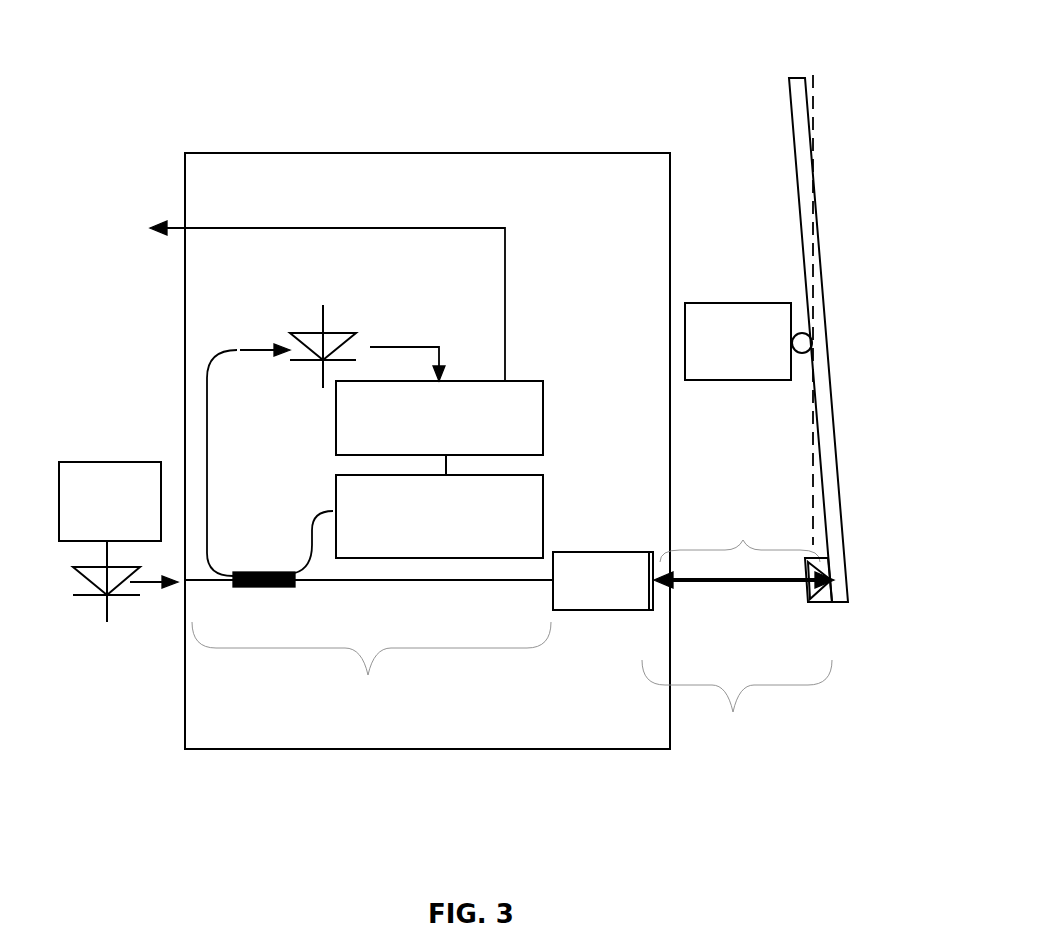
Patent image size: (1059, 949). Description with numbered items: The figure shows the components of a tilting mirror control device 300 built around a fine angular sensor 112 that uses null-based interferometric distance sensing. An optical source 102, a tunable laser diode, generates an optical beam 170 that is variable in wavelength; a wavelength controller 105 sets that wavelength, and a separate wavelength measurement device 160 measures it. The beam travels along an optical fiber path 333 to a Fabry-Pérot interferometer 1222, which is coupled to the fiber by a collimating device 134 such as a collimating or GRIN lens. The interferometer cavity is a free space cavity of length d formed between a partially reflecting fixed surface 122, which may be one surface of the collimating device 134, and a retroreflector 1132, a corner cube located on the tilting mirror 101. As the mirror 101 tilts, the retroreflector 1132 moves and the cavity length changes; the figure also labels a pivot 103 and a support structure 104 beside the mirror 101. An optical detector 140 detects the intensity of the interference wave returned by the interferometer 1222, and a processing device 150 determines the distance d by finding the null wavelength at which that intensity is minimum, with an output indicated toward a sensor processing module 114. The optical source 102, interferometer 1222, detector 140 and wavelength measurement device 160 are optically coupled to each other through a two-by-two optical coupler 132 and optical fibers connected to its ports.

The tilting mirror control device 300 is at (140, 106).
The fine angular sensor 112 is at (500, 181).
The sensor processing module 114 is at (283, 294).
The optical detector 140 is at (342, 323).
The processing device 150 is at (439, 418).
The wavelength measurement device 160 is at (439, 506).
The optical coupler 132 is at (270, 493).
The wavelength controller 105 is at (93, 535).
The optical source 102 is at (95, 603).
The optical beam 170 is at (146, 585).
The optical fiber path 333 is at (369, 657).
The collimating device 134 is at (601, 581).
The partially reflecting fixed surface 122 is at (651, 553).
The Fabry-Pérot interferometer 1222 is at (738, 639).
The tilting mirror 101 is at (792, 121).
The pivot 103 is at (800, 333).
The support structure 104 is at (724, 377).
The retroreflector 1132 is at (817, 604).